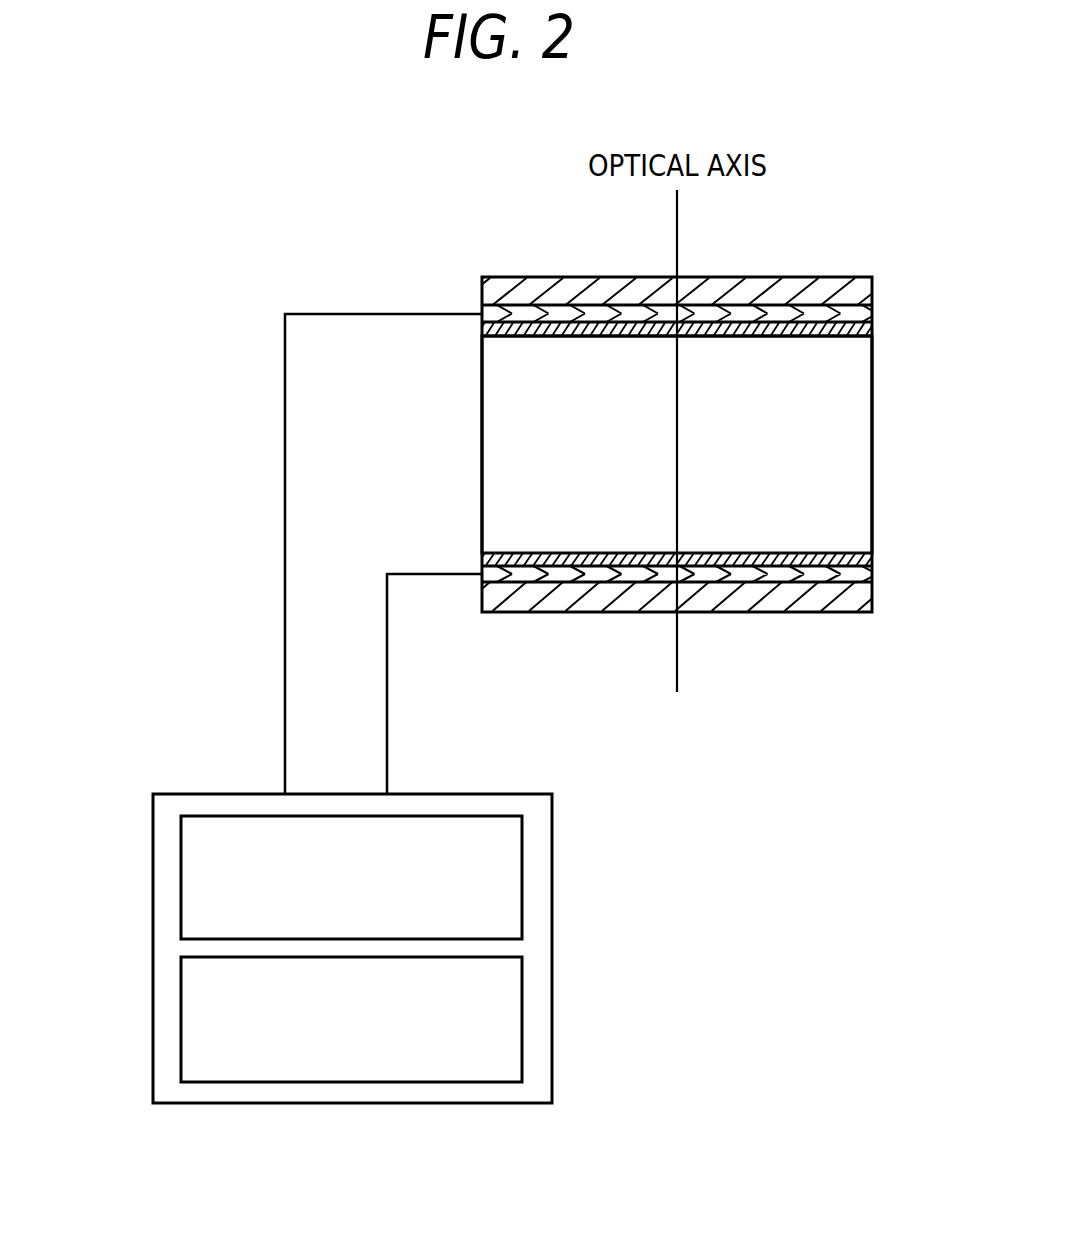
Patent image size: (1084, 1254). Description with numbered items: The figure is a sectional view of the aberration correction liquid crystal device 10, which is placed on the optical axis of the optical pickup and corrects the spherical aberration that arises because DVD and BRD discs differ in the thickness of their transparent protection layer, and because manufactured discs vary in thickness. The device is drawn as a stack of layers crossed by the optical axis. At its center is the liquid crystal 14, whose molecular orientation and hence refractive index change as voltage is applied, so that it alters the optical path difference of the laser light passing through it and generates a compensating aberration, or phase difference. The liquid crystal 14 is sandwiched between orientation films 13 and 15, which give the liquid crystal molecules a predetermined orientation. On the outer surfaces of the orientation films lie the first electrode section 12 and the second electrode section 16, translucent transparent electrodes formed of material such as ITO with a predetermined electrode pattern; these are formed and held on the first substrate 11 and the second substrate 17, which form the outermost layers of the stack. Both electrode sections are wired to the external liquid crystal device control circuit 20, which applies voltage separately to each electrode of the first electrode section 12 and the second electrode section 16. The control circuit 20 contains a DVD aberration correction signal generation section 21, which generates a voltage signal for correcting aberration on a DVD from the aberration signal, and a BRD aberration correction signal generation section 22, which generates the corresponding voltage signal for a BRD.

The aberration correction liquid crystal device 10 is at (715, 419).
The first substrate 11 is at (862, 292).
The first electrode section 12 is at (865, 312).
The orientation film 13 is at (865, 330).
The liquid crystal 14 is at (858, 440).
The orientation film 15 is at (866, 553).
The second electrode section 16 is at (866, 572).
The second substrate 17 is at (866, 590).
The liquid crystal device control circuit 20 is at (338, 948).
The DVD aberration correction signal generation section 21 is at (524, 876).
The BRD aberration correction signal generation section 22 is at (524, 1017).